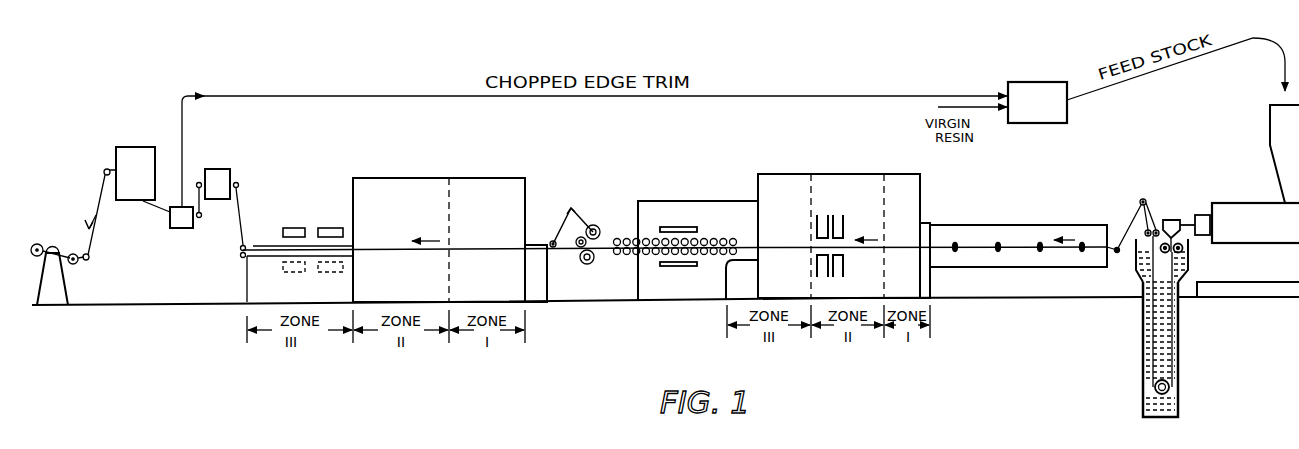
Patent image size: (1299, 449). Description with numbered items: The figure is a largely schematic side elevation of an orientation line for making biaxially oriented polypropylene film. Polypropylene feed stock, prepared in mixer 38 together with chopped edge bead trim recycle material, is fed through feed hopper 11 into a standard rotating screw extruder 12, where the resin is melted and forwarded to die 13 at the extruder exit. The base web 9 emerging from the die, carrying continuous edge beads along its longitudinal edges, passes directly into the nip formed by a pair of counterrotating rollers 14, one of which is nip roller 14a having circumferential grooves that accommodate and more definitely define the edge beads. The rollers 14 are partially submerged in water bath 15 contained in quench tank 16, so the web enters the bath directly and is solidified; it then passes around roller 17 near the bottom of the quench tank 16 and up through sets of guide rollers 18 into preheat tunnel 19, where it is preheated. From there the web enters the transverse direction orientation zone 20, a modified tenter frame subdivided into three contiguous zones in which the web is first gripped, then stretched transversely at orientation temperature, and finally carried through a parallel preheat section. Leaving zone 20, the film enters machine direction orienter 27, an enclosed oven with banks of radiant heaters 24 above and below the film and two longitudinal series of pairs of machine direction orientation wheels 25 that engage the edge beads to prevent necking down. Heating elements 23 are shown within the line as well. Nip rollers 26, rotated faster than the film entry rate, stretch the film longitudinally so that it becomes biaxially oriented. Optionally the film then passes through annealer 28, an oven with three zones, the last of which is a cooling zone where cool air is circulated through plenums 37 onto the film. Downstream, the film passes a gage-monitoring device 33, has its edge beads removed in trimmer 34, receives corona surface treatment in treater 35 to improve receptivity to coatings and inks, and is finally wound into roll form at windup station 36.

The base web 9 is at (581, 212).
The feed hopper 11 is at (1270, 133).
The extruder 12 is at (1284, 235).
The die 13 is at (1170, 218).
The counterrotating rollers 14 is at (1177, 254).
The nip roller 14a is at (1185, 254).
The water bath 15 is at (1140, 272).
The quench tank 16 is at (1143, 356).
The roller 17 is at (1170, 385).
The guide rollers 18 is at (1146, 231).
The preheat tunnel 19 is at (1010, 268).
The transverse direction orientation zone 20 is at (829, 173).
The heating elements 23 is at (816, 225).
The radiant heaters 24 is at (663, 226).
The machine direction orientation wheels 25 is at (632, 255).
The nip rollers 26 is at (583, 265).
The machine direction orienter 27 is at (690, 200).
The annealer 28 is at (418, 177).
The gage-monitoring device 33 is at (220, 168).
The trimmer 34 is at (186, 233).
The treater 35 is at (133, 146).
The windup station 36 is at (56, 293).
The plenums 37 is at (294, 226).
The mixer 38 is at (1025, 80).